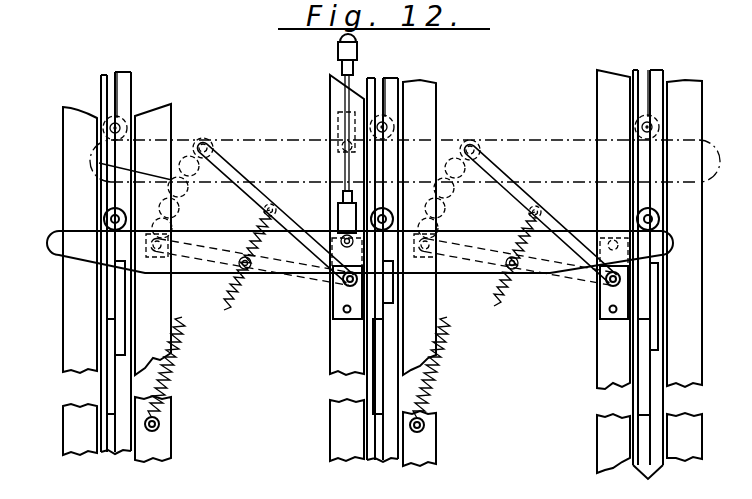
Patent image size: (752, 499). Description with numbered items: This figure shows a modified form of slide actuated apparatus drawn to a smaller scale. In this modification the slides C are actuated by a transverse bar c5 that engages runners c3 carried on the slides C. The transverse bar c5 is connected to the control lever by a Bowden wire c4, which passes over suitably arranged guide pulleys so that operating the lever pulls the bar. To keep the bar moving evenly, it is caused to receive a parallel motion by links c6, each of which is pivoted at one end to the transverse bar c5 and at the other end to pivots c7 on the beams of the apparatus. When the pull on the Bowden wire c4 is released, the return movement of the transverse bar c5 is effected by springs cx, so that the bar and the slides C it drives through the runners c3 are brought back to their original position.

The slide C is at (103, 288).
The runner c3 is at (104, 218).
The Bowden wire c4 is at (345, 84).
The transverse bar c5 is at (242, 152).
The link c6 is at (600, 277).
The pivot c7 is at (346, 284).
The spring cx is at (218, 328).